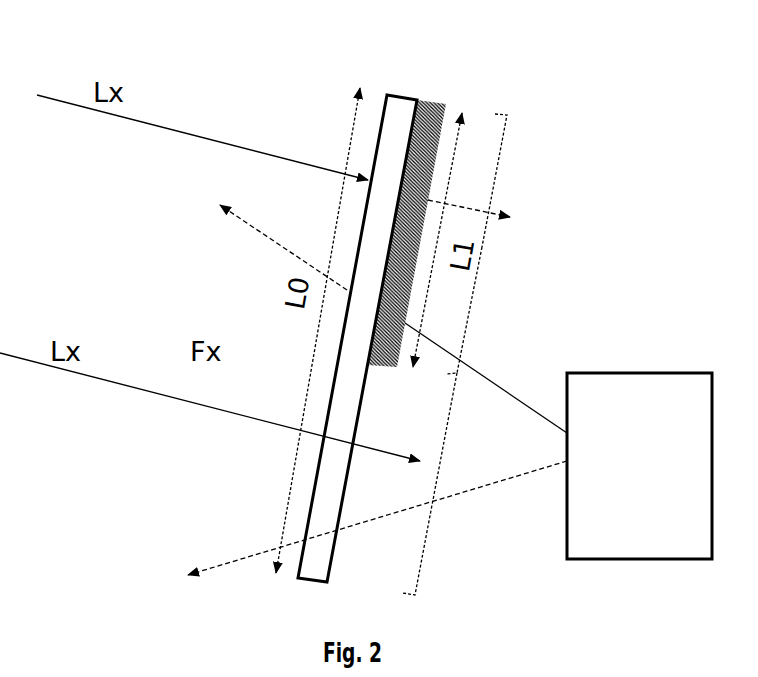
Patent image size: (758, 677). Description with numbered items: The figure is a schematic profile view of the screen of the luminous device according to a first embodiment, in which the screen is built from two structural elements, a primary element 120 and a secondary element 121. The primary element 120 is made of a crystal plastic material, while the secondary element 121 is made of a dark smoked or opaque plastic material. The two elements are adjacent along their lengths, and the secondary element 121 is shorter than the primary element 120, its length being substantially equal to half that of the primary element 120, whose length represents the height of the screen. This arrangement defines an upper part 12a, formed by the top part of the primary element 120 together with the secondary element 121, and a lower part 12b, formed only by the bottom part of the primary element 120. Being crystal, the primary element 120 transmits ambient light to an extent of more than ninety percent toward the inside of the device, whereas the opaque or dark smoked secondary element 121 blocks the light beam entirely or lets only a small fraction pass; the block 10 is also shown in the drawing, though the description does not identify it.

The light receiving unit 10 is at (639, 466).
The upper part 12a is at (482, 247).
The lower part 12b is at (435, 491).
The primary element 120 is at (388, 167).
The secondary element 121 is at (415, 100).